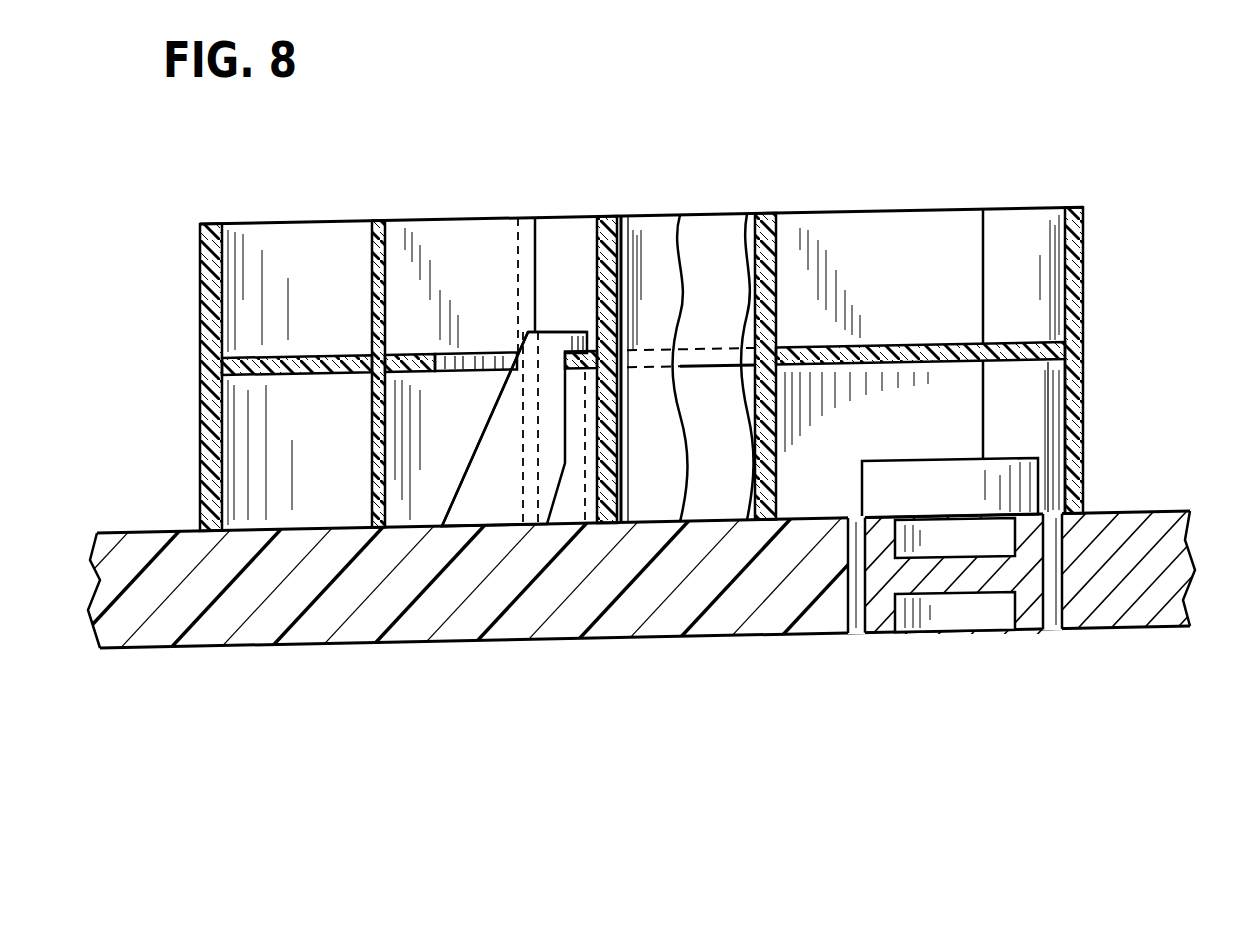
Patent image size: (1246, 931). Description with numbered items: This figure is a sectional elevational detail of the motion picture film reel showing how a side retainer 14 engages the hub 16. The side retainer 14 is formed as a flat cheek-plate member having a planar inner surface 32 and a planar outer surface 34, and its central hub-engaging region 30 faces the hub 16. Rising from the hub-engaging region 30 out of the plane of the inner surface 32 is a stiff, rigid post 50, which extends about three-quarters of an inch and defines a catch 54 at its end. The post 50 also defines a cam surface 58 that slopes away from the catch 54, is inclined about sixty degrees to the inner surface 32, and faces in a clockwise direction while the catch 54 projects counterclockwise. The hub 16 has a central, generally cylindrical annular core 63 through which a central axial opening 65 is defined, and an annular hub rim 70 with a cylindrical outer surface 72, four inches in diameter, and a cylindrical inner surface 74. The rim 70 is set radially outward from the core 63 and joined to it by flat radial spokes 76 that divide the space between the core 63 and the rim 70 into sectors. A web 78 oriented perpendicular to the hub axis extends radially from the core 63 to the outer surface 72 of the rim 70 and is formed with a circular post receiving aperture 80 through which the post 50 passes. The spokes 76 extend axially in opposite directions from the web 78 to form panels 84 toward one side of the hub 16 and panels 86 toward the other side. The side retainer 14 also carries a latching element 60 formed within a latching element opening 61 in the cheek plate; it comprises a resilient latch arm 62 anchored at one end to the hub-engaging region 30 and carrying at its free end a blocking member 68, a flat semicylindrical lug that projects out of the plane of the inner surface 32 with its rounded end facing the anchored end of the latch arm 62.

The side retainer 14 is at (692, 662).
The hub 16 is at (661, 361).
The hub-engaging region 30 is at (542, 647).
The inner surface 32 is at (150, 533).
The outer surface 34 is at (292, 647).
The post 50 is at (495, 433).
The catch 54 is at (578, 235).
The cam surface 58 is at (482, 437).
The latching element 60 is at (988, 636).
The latching element opening 61 is at (1052, 620).
The latch arm 62 is at (937, 595).
The annular core 63 is at (652, 243).
The central axial opening 65 is at (755, 252).
The blocking member 68 is at (960, 475).
The hub rim 70 is at (200, 302).
The cylindrical outer surface 72 is at (1085, 430).
The cylindrical inner surface 74 is at (220, 280).
The radial spoke 76 is at (472, 236).
The web 78 is at (402, 355).
The post receiving aperture 80 is at (478, 356).
The panel 84 is at (908, 230).
The panel 86 is at (820, 477).